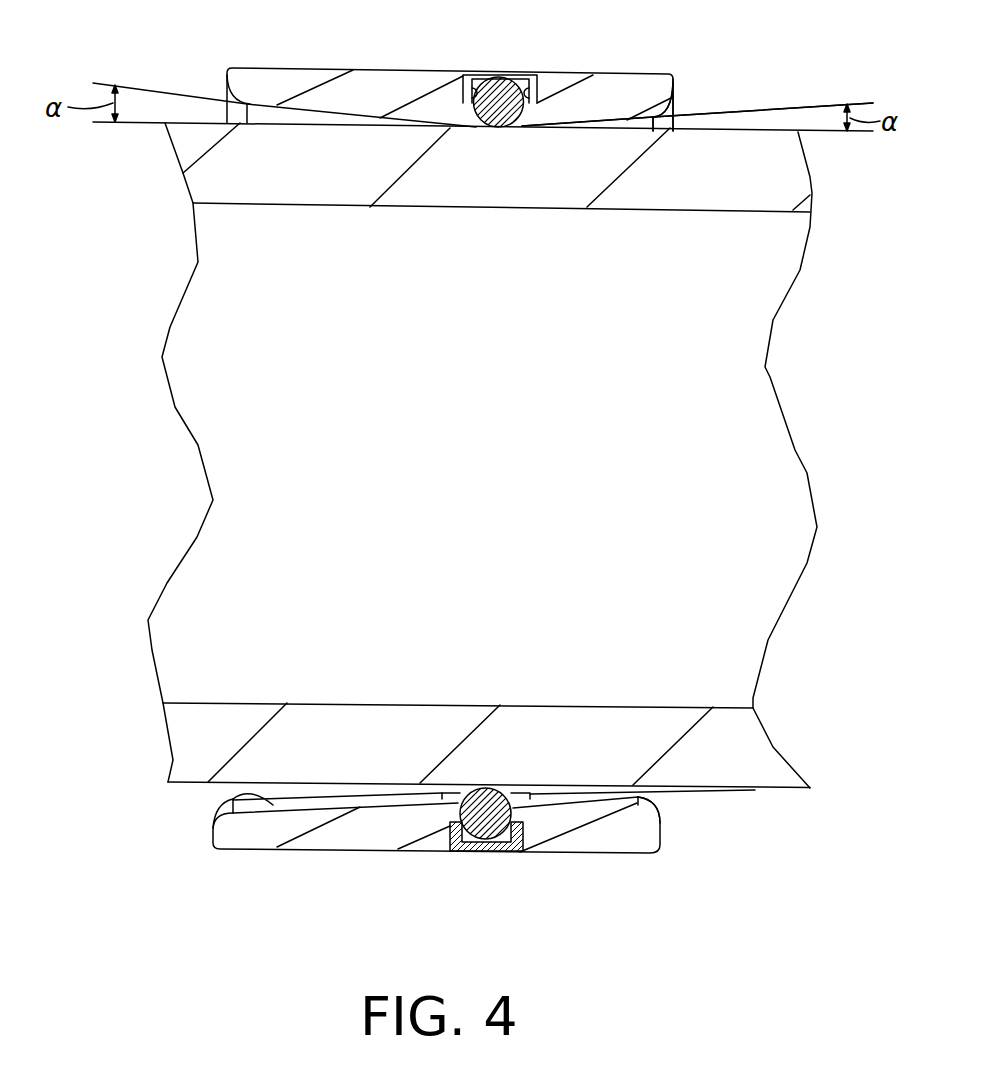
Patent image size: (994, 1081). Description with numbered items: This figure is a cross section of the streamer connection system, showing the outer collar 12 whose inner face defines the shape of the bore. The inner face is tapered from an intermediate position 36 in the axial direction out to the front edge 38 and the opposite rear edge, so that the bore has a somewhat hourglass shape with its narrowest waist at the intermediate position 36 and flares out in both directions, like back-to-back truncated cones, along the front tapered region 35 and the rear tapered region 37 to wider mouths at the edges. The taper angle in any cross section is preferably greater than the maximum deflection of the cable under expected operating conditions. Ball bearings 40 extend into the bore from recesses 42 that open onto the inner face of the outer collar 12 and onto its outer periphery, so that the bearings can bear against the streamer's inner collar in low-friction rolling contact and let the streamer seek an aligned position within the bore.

The outer collar 12 is at (377, 70).
The front tapered region 35 is at (233, 800).
The intermediate position 36 is at (540, 127).
The rear tapered region 37 is at (640, 796).
The front edge 38 is at (674, 78).
The ball bearing 40 is at (513, 808).
The recess 42 is at (538, 74).